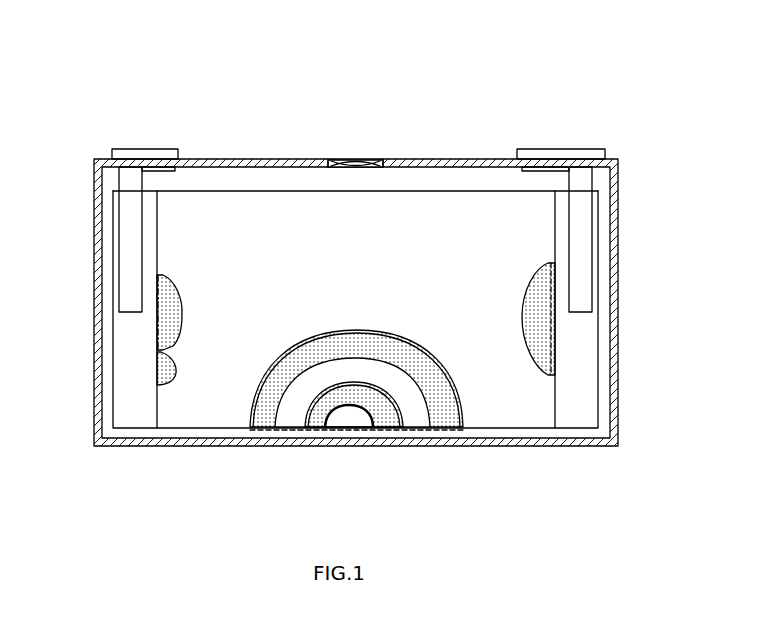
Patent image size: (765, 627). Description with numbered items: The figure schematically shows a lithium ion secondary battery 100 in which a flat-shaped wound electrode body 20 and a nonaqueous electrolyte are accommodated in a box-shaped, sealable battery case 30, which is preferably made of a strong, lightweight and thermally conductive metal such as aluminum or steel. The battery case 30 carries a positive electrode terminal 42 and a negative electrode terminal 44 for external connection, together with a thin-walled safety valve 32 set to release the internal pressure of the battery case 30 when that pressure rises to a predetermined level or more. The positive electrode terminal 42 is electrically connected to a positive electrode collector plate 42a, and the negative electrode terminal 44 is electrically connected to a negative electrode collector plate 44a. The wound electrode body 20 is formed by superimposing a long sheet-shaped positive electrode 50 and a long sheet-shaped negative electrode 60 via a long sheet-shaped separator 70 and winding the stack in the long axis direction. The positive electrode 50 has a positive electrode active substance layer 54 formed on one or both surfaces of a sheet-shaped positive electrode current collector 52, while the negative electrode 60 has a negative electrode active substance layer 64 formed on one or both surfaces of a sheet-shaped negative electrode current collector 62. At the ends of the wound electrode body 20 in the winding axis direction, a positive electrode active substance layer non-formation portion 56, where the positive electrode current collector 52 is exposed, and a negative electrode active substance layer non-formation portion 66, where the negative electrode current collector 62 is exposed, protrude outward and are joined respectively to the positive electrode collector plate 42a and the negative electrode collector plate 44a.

The lithium ion secondary battery 100 is at (91, 34).
The battery case 30 is at (99, 155).
The wound electrode body 20 is at (279, 188).
The safety valve 32 is at (360, 157).
The positive electrode terminal 42 is at (168, 147).
The negative electrode terminal 44 is at (525, 150).
The positive electrode collector plate 42a is at (130, 278).
The negative electrode collector plate 44a is at (590, 268).
The positive electrode current collector 52 is at (110, 371).
The negative electrode current collector 62 is at (600, 396).
The positive electrode active substance layer non-formation portion 56 is at (130, 418).
The negative electrode active substance layer non-formation portion 66 is at (575, 418).
The positive electrode active substance layer 54 is at (183, 308).
The negative electrode active substance layer 64 is at (522, 297).
The positive electrode 50 is at (265, 428).
The negative electrode 60 is at (321, 428).
The separator 70 is at (298, 428).